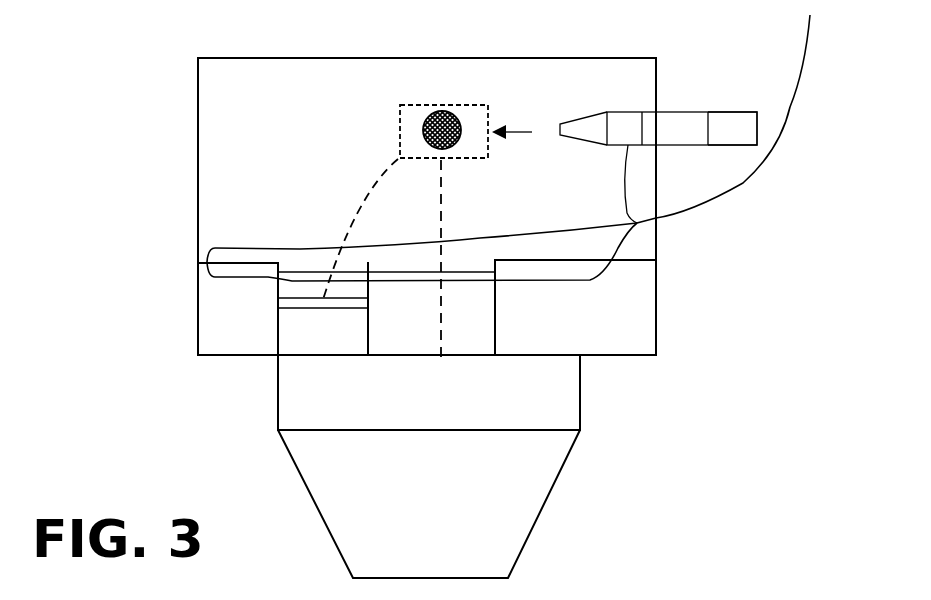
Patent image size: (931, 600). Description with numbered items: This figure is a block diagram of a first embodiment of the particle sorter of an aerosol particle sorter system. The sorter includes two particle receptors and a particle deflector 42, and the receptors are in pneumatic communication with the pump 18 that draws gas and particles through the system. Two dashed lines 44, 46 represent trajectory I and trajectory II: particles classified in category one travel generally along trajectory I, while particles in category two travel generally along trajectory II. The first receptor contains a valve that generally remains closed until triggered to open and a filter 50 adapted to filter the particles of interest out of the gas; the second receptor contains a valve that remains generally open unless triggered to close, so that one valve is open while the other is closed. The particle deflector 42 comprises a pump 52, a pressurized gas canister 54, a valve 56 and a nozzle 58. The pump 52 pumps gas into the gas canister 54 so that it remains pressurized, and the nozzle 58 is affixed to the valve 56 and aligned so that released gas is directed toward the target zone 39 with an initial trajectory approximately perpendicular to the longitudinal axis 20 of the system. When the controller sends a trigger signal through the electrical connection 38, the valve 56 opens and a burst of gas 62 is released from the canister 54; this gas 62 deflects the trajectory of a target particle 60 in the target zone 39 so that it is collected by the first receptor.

The pump 18 is at (549, 424).
The longitudinal axis 20 is at (479, 567).
The electrical connection 38 is at (745, 187).
The target zone 39 is at (398, 127).
The particle deflector 42 is at (662, 100).
The dashed line (trajectory I) 44 is at (380, 187).
The dashed line (trajectory II) 46 is at (443, 360).
The filter 50 is at (290, 306).
The pump 52 is at (740, 110).
The pressurized gas canister 54 is at (690, 110).
The valve 56 is at (623, 130).
The nozzle 58 is at (570, 125).
The target particle 60 is at (441, 111).
The burst of gas 62 is at (520, 133).